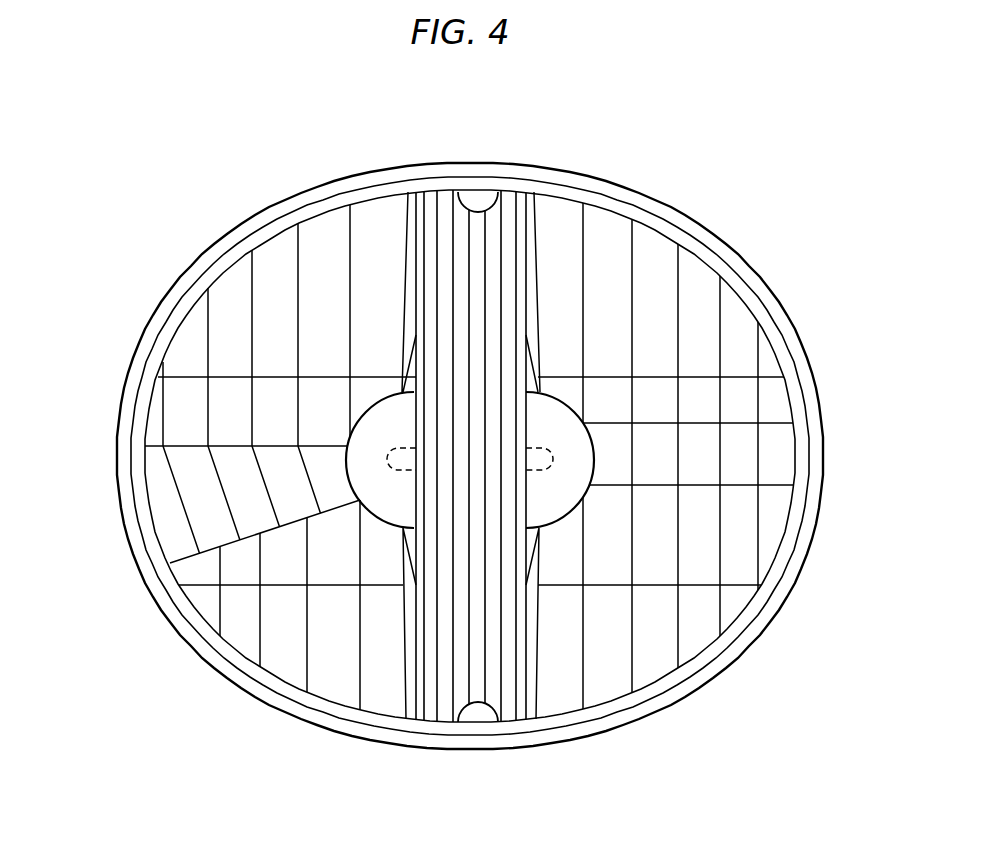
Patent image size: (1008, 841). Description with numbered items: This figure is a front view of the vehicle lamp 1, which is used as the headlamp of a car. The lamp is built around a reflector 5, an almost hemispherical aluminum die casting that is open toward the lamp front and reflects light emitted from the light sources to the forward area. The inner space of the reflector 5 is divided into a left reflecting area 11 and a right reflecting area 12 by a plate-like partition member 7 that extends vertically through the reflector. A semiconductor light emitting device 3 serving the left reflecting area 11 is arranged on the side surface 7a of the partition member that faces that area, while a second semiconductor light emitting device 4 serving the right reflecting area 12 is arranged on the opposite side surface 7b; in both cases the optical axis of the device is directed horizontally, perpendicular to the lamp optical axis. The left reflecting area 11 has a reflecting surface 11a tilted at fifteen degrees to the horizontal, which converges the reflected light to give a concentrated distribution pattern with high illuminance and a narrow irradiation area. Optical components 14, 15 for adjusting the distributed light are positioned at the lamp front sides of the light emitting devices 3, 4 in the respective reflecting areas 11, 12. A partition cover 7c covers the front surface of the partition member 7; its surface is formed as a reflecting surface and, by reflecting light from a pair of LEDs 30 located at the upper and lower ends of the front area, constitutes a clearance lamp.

The vehicle lamp 1 is at (666, 187).
The semiconductor light emitting device 3 is at (247, 536).
The semiconductor light emitting device 4 is at (686, 515).
The reflector 5 is at (735, 232).
The plate-like partition member 7 is at (535, 663).
The side surface 7a is at (413, 368).
The side surface 7b is at (537, 372).
The partition cover 7c is at (460, 652).
The reflecting area 11 is at (285, 625).
The reflecting surface 11a is at (260, 535).
The reflecting area 12 is at (648, 637).
The optical component 14 is at (373, 428).
The optical component 15 is at (580, 456).
The LED 30 is at (477, 191).